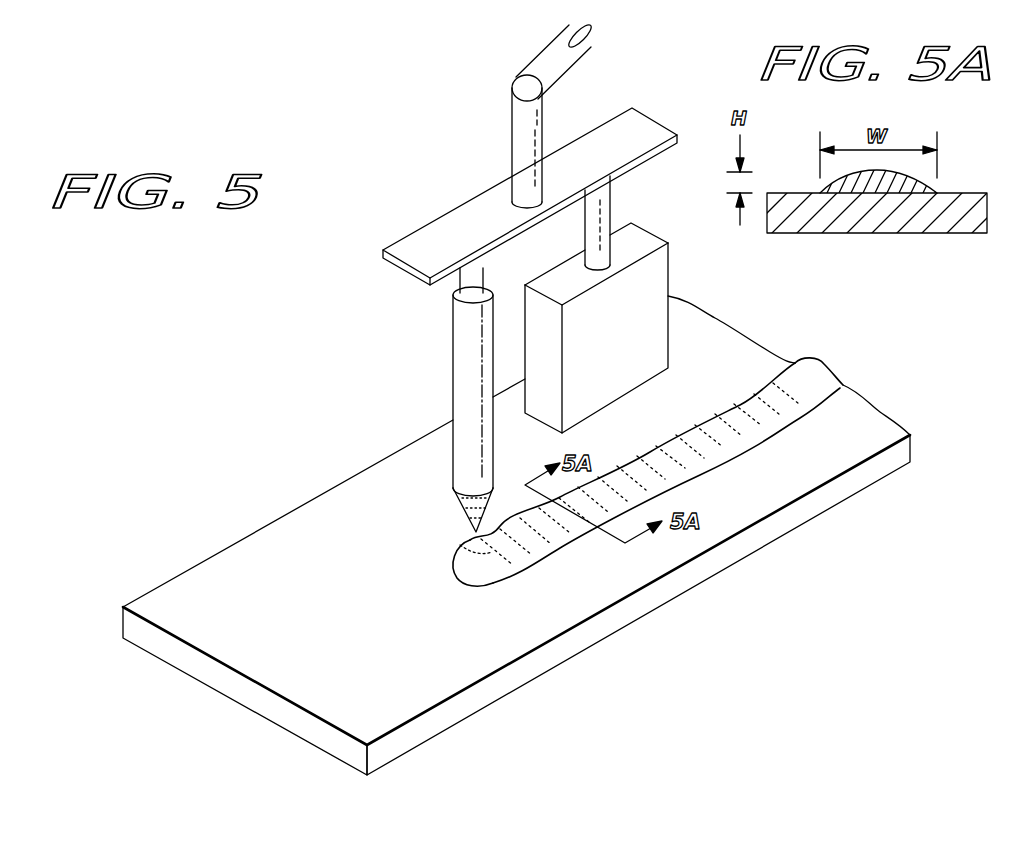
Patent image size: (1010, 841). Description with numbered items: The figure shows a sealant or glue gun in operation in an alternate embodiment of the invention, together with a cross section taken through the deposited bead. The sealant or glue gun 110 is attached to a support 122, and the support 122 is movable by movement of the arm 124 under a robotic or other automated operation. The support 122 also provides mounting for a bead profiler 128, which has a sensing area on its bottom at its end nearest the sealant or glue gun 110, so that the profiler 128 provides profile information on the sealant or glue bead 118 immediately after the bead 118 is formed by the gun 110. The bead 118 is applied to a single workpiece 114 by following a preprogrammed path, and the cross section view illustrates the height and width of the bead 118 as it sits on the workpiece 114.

In FIG. 5, the sealant or glue gun 110 is at (468, 325).
In FIG. 5, the workpiece 114 is at (203, 590).
In FIG. 5A, the workpiece 114 is at (842, 223).
In FIG. 5, the sealant or glue bead 118 is at (820, 377).
In FIG. 5A, the sealant or glue bead 118 is at (917, 183).
In FIG. 5, the support 122 is at (490, 210).
In FIG. 5, the arm 124 is at (562, 43).
In FIG. 5, the bead profiler 128 is at (642, 247).